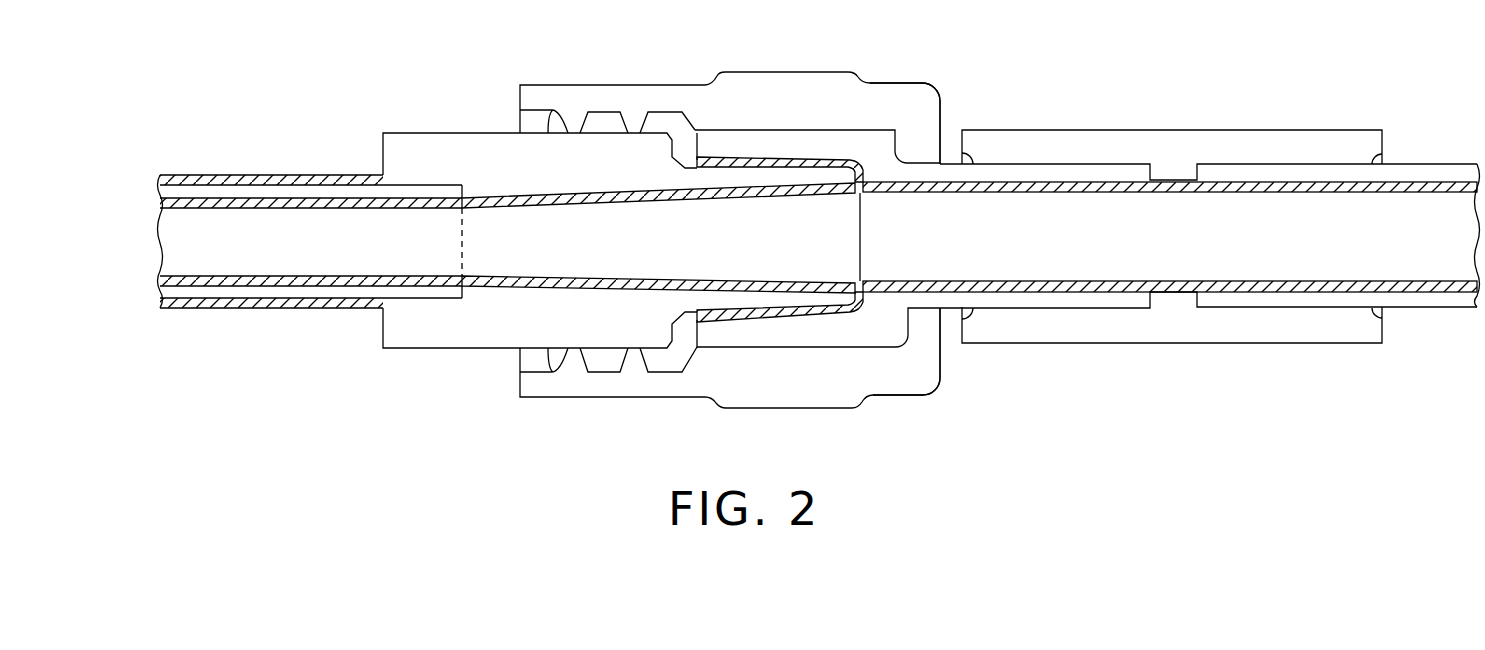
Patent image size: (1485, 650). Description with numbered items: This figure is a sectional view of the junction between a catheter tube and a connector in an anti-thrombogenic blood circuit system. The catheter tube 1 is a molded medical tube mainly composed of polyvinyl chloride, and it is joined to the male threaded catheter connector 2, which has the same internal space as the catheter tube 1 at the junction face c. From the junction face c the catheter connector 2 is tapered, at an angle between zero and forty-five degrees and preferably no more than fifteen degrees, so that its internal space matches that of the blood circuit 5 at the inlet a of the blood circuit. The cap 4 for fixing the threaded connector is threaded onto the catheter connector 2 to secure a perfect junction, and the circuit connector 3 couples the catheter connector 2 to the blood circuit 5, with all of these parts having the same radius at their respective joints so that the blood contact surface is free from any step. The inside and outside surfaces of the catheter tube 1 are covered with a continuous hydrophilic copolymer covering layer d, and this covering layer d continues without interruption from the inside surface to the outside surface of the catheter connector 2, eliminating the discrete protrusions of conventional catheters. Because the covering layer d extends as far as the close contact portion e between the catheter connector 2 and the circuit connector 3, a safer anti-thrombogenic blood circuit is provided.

The catheter tube 1 is at (236, 192).
The threaded catheter connector 2 is at (498, 170).
The connector 3 is at (864, 150).
The cap for fixing the threaded connector 4 is at (919, 119).
The blood circuit 5 is at (1433, 168).
The inlet of blood circuit a is at (867, 260).
The junction face between catheter tube and connector c is at (452, 249).
The hydrophilic copolymer covering layer d is at (194, 285).
The close contact portion between catheter connector and circuit connector e is at (767, 320).